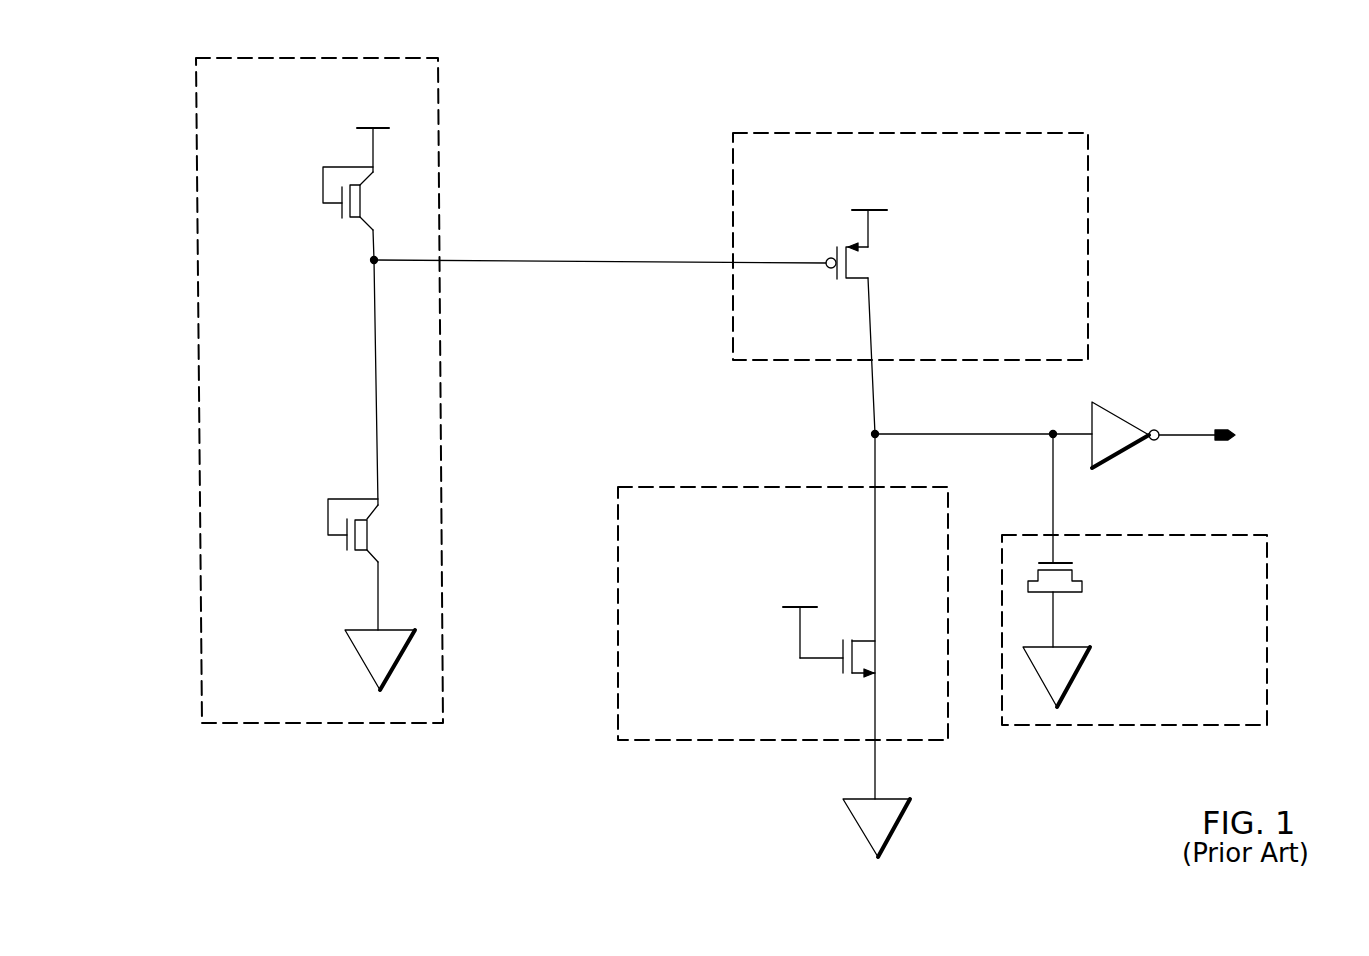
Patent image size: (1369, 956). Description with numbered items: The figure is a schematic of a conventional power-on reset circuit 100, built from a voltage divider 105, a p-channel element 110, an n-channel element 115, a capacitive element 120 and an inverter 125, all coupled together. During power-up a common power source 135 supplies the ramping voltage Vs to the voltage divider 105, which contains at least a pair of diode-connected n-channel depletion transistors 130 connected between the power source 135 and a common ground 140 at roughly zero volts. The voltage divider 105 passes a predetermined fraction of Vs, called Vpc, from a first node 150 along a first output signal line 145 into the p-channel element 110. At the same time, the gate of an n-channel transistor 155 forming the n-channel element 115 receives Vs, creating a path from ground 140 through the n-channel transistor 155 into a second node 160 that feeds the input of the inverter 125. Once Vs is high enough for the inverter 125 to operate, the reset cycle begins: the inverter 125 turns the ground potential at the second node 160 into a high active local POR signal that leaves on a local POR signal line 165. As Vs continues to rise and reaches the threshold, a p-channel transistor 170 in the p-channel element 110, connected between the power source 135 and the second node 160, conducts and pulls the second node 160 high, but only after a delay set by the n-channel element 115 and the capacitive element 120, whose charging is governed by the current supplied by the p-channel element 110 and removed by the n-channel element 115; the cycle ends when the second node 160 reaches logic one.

The power-on reset circuit 100 is at (494, 693).
The voltage divider 105 is at (468, 110).
The p-channel element 110 is at (1048, 292).
The n-channel element 115 is at (688, 652).
The capacitive element 120 is at (1228, 672).
The inverter 125 is at (1130, 444).
The diode-connected n-channel depletion transistors 130 is at (256, 415).
The power source 135 is at (377, 128).
The common ground 140 is at (396, 653).
The first output signal line 145 is at (492, 261).
The first node 150 is at (376, 260).
The n-channel transistor 155 is at (848, 681).
The second node 160 is at (873, 438).
The local POR signal line 165 is at (1202, 437).
The p-channel transistor 170 is at (817, 220).